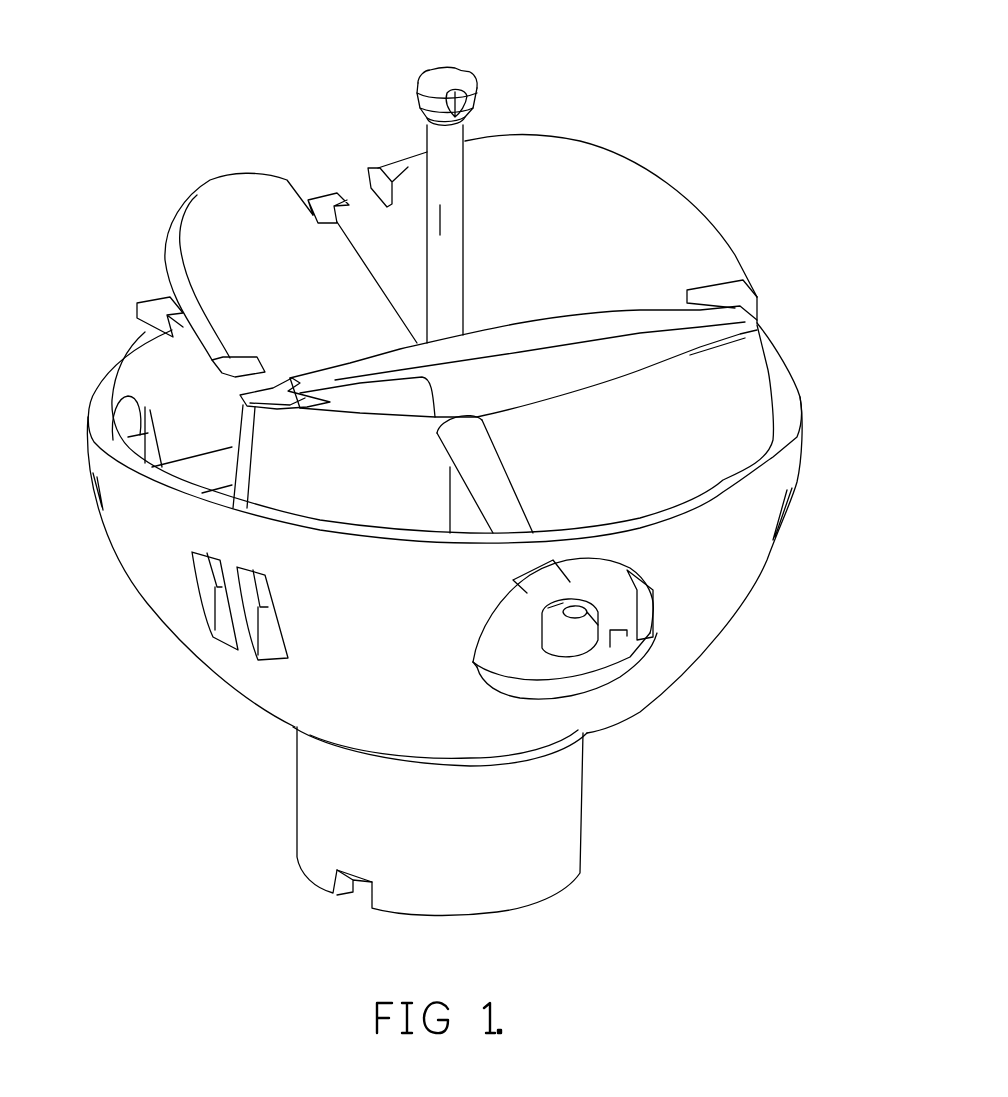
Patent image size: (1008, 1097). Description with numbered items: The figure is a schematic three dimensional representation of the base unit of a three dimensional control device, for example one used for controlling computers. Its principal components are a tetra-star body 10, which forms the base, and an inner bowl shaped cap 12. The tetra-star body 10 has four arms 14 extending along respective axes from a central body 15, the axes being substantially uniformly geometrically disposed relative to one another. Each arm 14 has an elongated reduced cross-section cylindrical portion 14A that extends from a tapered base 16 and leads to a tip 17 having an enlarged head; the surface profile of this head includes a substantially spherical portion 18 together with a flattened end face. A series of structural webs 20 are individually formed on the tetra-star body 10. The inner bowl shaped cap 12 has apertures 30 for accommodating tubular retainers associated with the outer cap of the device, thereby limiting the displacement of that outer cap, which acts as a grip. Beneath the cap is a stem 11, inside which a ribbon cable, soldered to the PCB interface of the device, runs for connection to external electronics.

The tetra-star body 10 is at (431, 468).
The stem 11 is at (547, 828).
The inner bowl shaped cap 12 is at (431, 513).
The arm 14 is at (447, 152).
The elongated reduced cross-section cylindrical portion 14A is at (442, 217).
The central body 15 is at (383, 397).
The tapered base 16 is at (440, 297).
The tip 17 is at (479, 390).
The spherical portion 18 is at (428, 98).
The structural webs 20 is at (650, 257).
The apertures 30 is at (208, 473).